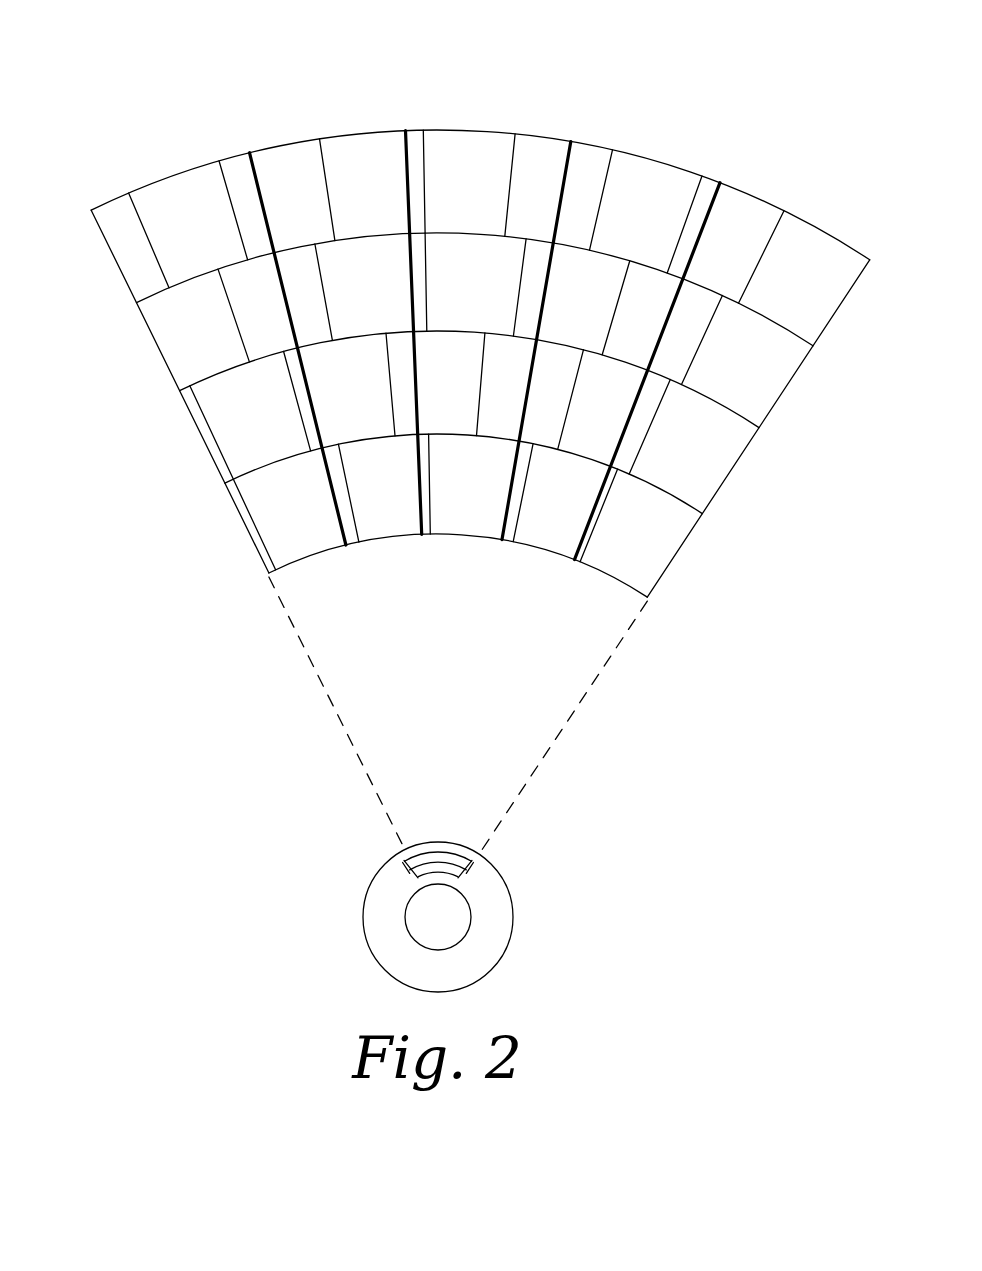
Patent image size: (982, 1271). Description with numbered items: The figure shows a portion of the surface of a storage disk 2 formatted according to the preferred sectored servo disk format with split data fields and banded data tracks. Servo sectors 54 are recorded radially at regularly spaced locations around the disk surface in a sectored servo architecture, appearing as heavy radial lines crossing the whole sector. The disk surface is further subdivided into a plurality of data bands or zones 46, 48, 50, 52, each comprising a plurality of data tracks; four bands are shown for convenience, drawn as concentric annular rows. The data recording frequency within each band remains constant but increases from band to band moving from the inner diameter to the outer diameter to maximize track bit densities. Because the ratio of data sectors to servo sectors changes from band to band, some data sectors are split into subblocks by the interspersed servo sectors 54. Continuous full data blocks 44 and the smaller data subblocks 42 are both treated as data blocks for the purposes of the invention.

The storage disk 2 is at (512, 895).
The data subblock 42 is at (106, 206).
The full data block 44 is at (167, 178).
The data band 46 is at (457, 238).
The data band 48 is at (426, 368).
The data band 50 is at (422, 455).
The data band 52 is at (480, 403).
The servo sector 54 is at (404, 126).